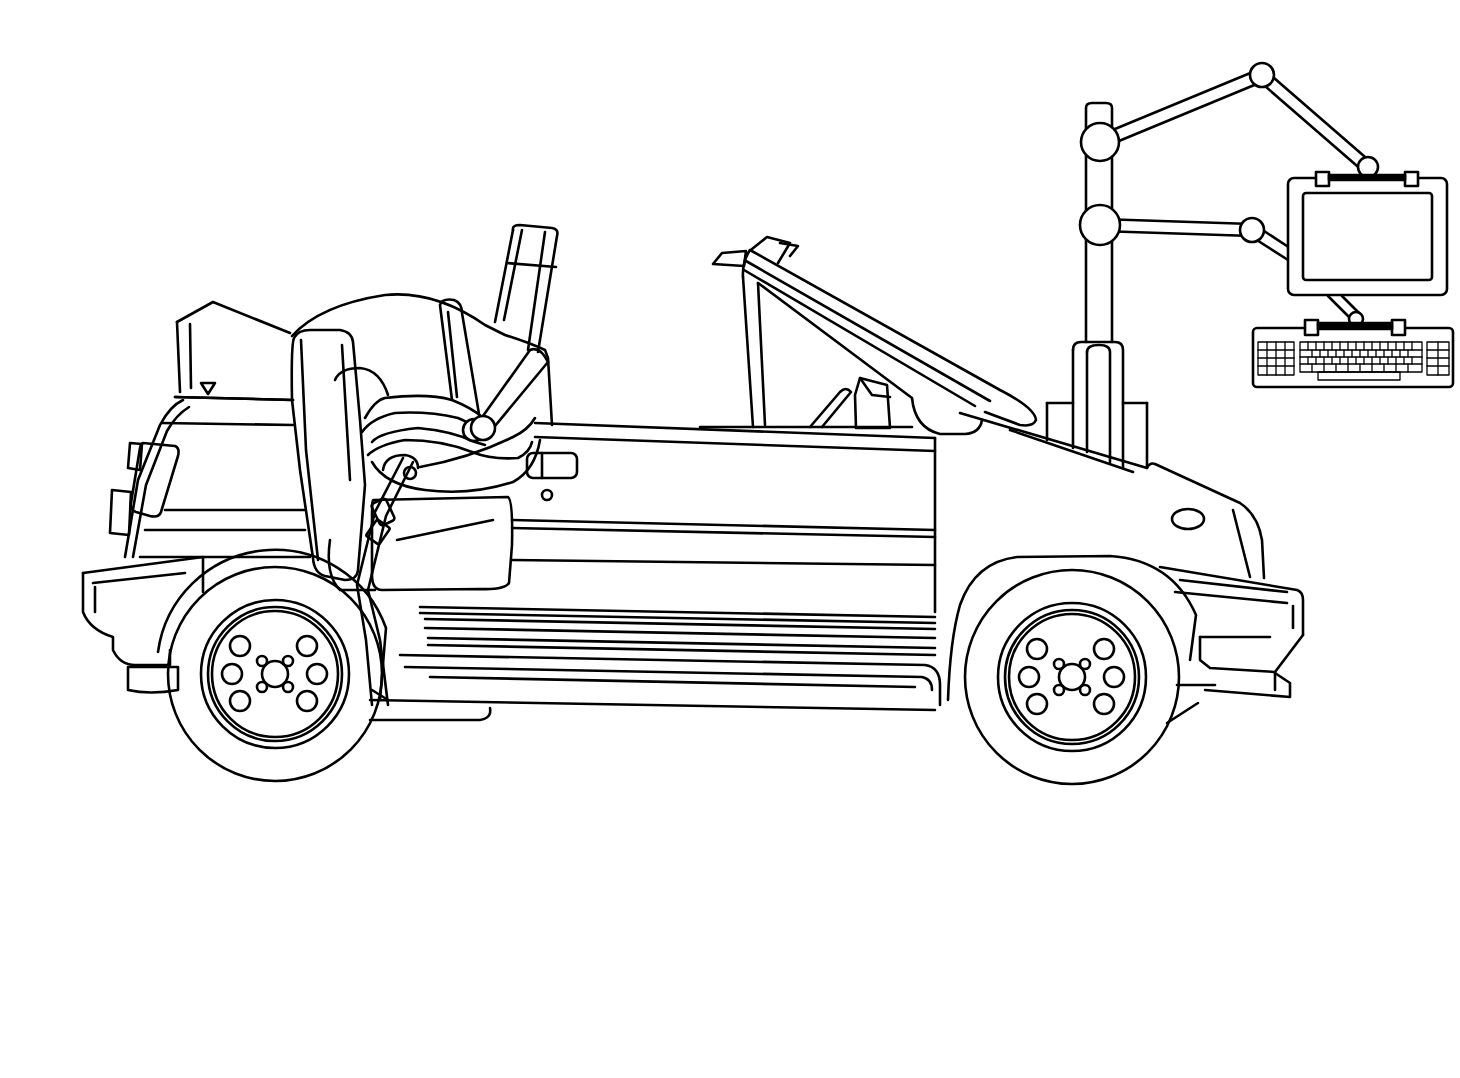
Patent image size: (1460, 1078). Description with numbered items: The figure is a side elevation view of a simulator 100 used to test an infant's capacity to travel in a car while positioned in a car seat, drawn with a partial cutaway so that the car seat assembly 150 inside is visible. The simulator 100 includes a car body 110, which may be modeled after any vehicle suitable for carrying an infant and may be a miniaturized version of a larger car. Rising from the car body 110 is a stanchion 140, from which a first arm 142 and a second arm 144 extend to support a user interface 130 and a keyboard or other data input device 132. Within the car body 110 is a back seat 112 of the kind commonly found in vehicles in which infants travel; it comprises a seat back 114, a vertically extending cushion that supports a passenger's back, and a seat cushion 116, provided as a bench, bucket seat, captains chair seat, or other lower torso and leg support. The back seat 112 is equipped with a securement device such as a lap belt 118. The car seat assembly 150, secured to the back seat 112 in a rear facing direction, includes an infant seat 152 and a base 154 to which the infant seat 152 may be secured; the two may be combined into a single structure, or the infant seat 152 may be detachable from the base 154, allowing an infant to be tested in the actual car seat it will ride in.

The simulator 100 is at (294, 96).
The car body 110 is at (718, 492).
The back seat 112 is at (283, 487).
The seat back 114 is at (334, 451).
The seat cushion 116 is at (495, 561).
The lap belt 118 is at (385, 483).
The user interface 130 is at (1296, 179).
The data input device 132 is at (1268, 328).
The stanchion 140 is at (1098, 272).
The first arm 142 is at (1180, 101).
The second arm 144 is at (1196, 221).
The car seat assembly 150 is at (370, 272).
The infant seat 152 is at (515, 371).
The base 154 is at (487, 492).